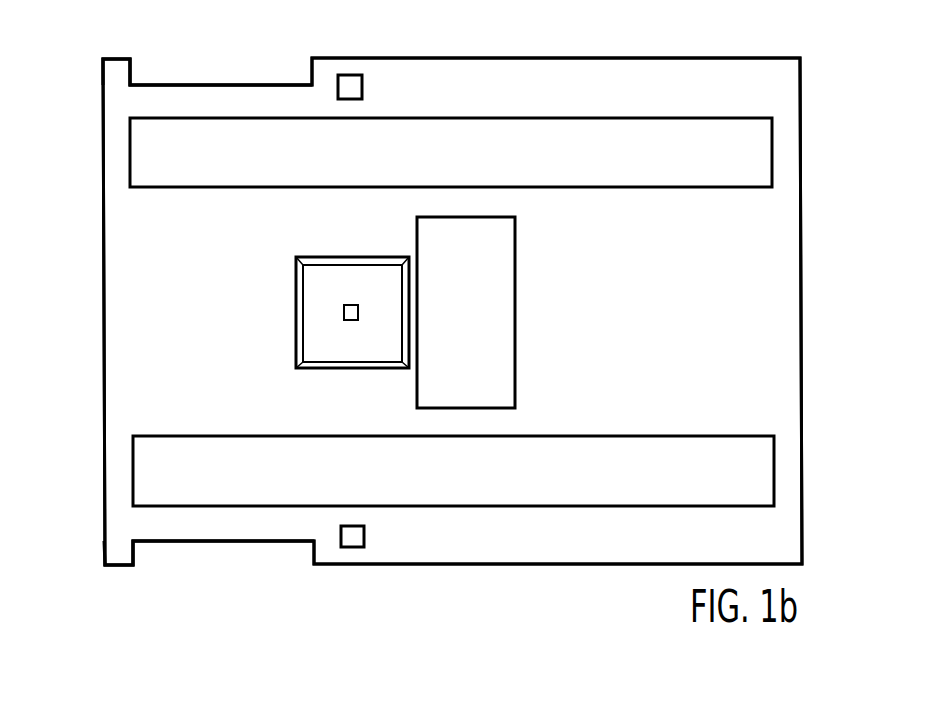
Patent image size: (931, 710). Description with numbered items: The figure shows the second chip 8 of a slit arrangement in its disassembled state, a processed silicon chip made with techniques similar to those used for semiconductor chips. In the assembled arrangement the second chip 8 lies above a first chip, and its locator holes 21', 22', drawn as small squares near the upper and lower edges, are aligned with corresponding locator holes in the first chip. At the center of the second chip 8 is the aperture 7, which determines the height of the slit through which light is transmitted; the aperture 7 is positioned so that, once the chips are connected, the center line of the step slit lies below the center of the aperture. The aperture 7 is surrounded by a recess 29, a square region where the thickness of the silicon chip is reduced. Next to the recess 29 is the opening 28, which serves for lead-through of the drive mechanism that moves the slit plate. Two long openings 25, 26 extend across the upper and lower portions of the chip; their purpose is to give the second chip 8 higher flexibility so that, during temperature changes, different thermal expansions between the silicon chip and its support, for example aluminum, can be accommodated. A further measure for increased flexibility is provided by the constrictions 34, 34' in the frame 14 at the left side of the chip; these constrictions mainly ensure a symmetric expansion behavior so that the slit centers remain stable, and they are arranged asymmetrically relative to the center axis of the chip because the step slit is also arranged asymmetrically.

The second chip 8 is at (832, 217).
The frame 14 is at (523, 75).
The constriction 34 is at (207, 48).
The constriction 34' is at (209, 573).
The locator hole 21' is at (360, 55).
The locator hole 22' is at (356, 565).
The opening 25 is at (762, 150).
The opening 26 is at (758, 472).
The opening 28 is at (498, 267).
The recess 29 is at (317, 292).
The aperture 7 is at (355, 315).